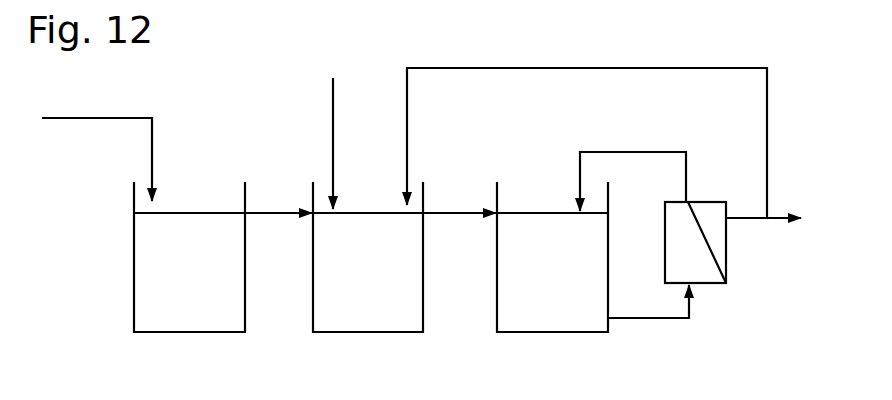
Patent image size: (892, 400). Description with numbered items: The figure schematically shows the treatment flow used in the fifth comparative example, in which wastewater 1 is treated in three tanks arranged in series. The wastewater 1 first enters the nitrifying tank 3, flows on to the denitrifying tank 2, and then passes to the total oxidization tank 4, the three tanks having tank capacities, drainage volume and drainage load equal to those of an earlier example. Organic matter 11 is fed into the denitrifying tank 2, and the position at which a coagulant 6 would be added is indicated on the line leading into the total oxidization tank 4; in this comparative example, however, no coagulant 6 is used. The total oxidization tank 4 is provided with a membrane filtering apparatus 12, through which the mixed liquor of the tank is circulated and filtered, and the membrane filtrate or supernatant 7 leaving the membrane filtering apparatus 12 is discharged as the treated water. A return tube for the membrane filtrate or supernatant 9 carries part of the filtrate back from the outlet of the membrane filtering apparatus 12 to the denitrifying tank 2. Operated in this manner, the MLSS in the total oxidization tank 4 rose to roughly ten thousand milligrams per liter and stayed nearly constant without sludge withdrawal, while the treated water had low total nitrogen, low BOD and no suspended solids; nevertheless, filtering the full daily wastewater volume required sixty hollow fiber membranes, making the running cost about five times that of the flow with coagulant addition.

The wastewater 1 is at (110, 117).
The denitrifying tank 2 is at (405, 333).
The nitrifying tank 3 is at (220, 333).
The total oxidization tank 4 is at (578, 333).
The coagulant 6 is at (493, 200).
The membrane filtrate or supernatant 7 is at (773, 207).
The return tube for the membrane filtrate or supernatant 9 is at (530, 66).
The organic matter 11 is at (336, 127).
The membrane filtering apparatus 12 is at (726, 250).